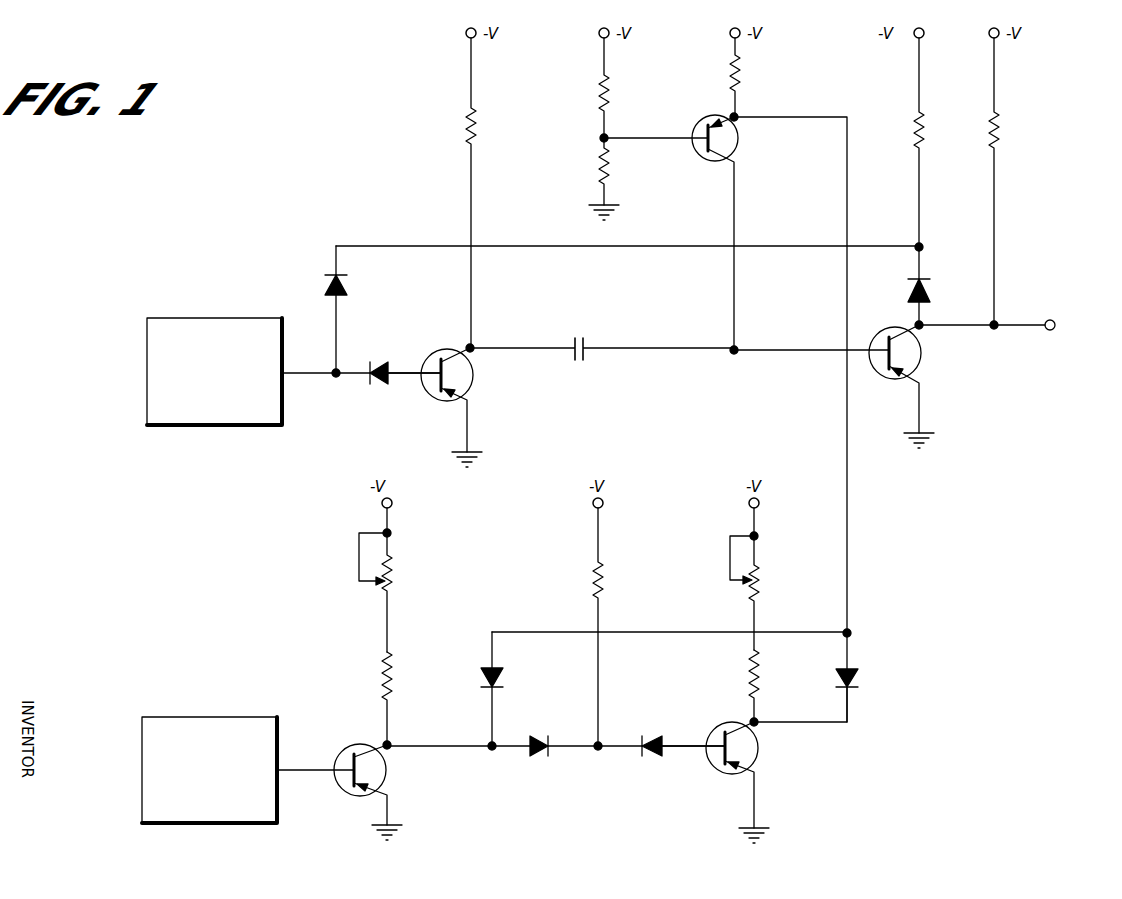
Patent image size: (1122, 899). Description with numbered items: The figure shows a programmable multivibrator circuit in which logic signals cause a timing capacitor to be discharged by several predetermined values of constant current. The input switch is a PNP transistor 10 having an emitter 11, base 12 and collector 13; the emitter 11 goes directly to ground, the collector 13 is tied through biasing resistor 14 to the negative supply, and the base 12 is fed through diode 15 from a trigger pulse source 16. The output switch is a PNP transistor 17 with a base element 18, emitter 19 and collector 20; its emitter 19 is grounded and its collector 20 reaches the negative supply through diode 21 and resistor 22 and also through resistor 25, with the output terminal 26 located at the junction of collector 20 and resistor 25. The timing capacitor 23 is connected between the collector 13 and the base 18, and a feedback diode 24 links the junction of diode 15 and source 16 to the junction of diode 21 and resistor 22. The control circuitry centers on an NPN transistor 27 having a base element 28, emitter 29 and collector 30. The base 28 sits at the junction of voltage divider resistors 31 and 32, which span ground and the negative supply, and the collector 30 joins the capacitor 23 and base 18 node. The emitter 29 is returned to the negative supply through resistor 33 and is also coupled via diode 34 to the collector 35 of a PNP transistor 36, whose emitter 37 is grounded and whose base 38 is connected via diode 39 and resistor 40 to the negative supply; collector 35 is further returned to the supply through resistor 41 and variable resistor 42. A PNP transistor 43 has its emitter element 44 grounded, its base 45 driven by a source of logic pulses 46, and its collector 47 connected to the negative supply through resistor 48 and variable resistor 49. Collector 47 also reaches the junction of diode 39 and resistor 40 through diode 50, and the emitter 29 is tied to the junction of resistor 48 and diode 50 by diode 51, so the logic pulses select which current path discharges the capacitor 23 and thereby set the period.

The PNP transistor 10 is at (513, 385).
The emitter 11 is at (470, 403).
The base 12 is at (399, 364).
The collector 13 is at (462, 347).
The biasing resistor 14 is at (466, 123).
The diode 15 is at (374, 388).
The trigger pulse source 16 is at (232, 318).
The PNP transistor 17 is at (959, 366).
The base element 18 is at (790, 348).
The emitter 19 is at (922, 391).
The collector 20 is at (900, 336).
The diode 21 is at (924, 290).
The resistor 22 is at (913, 135).
The timing capacitor 23 is at (582, 338).
The feedback diode 24 is at (350, 282).
The resistor 25 is at (1000, 132).
The output terminal 26 is at (1045, 332).
The NPN transistor 27 is at (781, 152).
The base element 28 is at (658, 136).
The emitter 29 is at (718, 122).
The collector 30 is at (710, 165).
The voltage divider resistor 31 is at (598, 93).
The voltage divider resistor 32 is at (596, 160).
The resistor 33 is at (744, 75).
The diode 34 is at (860, 675).
The collector 35 is at (742, 730).
The PNP transistor 36 is at (795, 754).
The emitter 37 is at (754, 790).
The base 38 is at (684, 740).
The diode 39 is at (650, 758).
The resistor 40 is at (604, 568).
The resistor 41 is at (746, 659).
The variable resistor 42 is at (762, 580).
The PNP transistor 43 is at (431, 780).
The emitter element 44 is at (370, 790).
The base 45 is at (312, 769).
The source of logic pulses 46 is at (227, 717).
The collector 47 is at (366, 752).
The resistor 48 is at (382, 661).
The variable resistor 49 is at (396, 580).
The diode 50 is at (552, 716).
The diode 51 is at (480, 678).